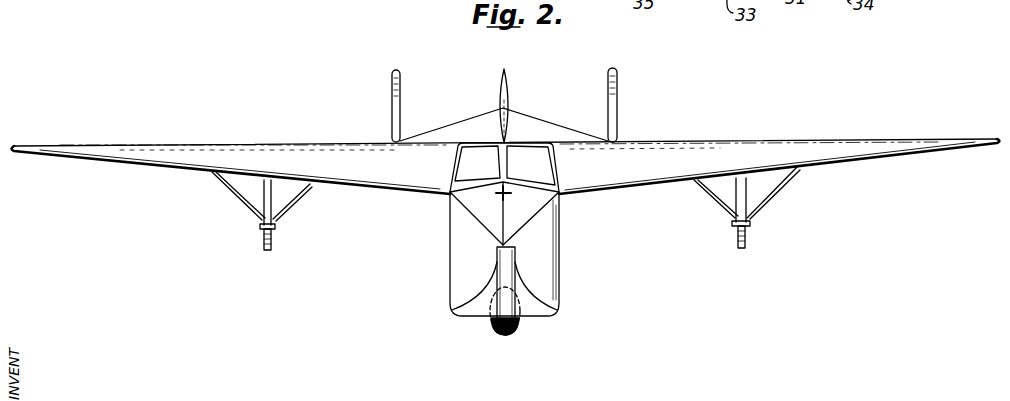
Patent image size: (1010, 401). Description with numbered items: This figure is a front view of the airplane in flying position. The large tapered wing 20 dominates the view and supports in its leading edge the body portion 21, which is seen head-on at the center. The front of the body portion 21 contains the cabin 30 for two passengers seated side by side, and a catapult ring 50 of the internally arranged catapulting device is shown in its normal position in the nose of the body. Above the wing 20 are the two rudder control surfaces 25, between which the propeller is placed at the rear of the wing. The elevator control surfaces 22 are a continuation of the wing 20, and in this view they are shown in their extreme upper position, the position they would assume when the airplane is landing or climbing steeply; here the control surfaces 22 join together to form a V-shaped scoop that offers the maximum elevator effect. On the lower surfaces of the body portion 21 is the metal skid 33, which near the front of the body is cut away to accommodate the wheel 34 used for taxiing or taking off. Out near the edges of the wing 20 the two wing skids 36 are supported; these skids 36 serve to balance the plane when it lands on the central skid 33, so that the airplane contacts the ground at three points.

The wing 20 is at (830, 139).
The body portion 21 is at (560, 284).
The elevator control surfaces 22 is at (457, 125).
The rudder control surfaces 25 is at (391, 81).
The cabin 30 is at (527, 143).
The metal skid 33 is at (508, 270).
The wheel 34 is at (518, 333).
The wing skids 36 is at (268, 252).
The catapult ring 50 is at (500, 198).